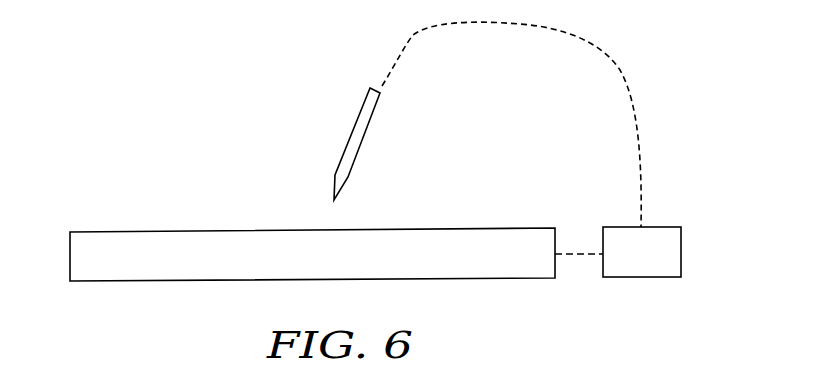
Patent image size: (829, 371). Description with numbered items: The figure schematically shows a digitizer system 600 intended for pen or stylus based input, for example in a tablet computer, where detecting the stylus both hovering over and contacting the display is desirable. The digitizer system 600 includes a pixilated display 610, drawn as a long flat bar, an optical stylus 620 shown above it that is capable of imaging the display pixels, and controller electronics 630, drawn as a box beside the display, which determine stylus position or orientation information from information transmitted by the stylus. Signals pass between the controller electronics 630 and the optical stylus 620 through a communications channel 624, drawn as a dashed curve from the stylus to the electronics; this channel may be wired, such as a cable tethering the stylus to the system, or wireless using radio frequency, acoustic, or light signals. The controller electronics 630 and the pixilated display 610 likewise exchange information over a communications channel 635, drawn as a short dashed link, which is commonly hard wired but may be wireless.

The digitizer system 600 is at (165, 137).
The pixilated display 610 is at (102, 270).
The optical stylus 620 is at (357, 127).
The communications channel 624 is at (415, 34).
The controller electronics 630 is at (647, 267).
The communications channel 635 is at (580, 257).